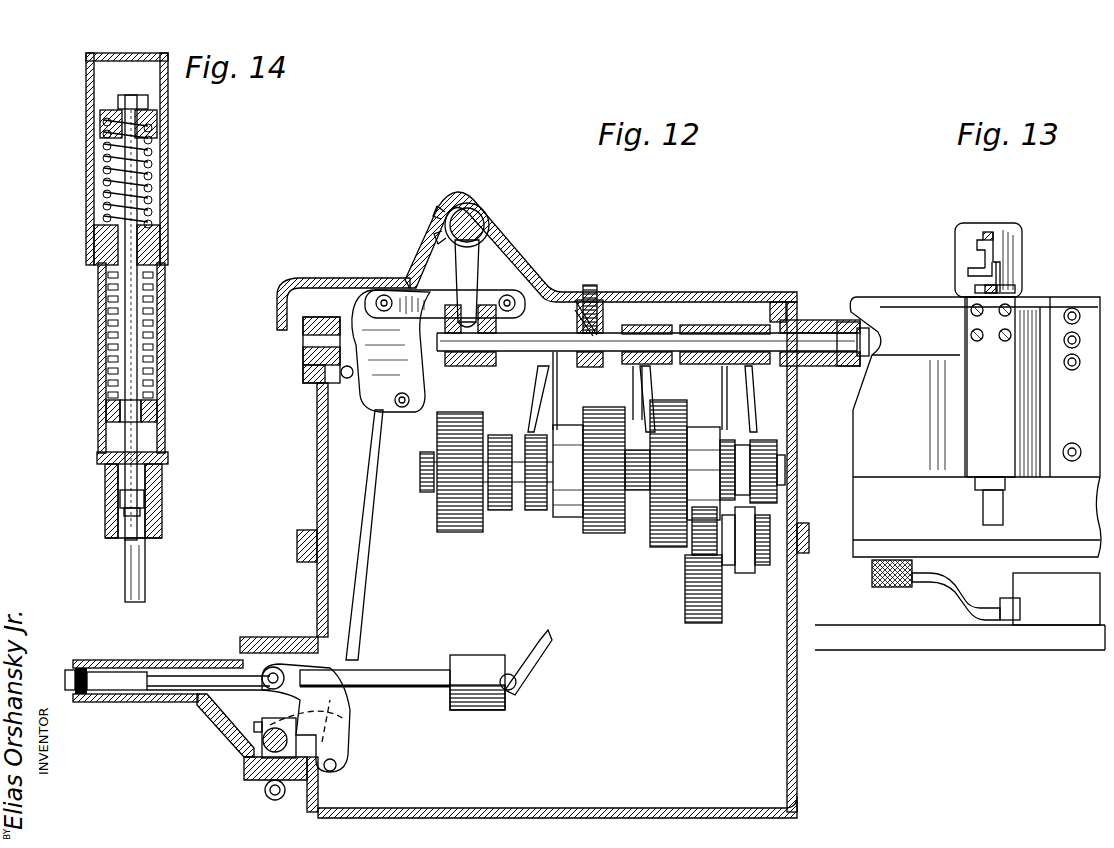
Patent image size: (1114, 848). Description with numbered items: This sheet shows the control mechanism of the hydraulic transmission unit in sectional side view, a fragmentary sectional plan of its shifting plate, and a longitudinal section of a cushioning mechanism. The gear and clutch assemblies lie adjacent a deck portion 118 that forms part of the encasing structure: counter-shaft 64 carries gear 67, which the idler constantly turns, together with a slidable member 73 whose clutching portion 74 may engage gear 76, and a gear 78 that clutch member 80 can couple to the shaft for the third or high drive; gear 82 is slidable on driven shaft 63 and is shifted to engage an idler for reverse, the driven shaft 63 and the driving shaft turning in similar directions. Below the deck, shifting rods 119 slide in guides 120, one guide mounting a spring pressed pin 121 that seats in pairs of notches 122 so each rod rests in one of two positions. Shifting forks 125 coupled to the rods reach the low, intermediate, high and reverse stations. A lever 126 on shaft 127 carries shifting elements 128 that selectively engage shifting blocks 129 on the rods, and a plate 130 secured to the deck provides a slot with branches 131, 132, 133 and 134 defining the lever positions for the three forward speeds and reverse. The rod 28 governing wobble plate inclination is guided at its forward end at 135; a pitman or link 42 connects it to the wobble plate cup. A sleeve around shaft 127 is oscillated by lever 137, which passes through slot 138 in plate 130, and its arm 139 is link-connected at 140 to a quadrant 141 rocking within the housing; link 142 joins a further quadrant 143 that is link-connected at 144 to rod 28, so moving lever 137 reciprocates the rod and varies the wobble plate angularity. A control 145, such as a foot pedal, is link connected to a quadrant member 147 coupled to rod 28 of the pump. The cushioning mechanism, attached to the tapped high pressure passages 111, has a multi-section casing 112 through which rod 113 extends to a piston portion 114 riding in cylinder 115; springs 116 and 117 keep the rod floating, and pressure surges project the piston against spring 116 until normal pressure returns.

In FIG. 12, the rod 28 is at (402, 658).
In FIG. 12, the pitman or link 42 is at (535, 662).
In FIG. 12, the driven shaft 63 is at (770, 535).
In FIG. 12, the counter-shaft 64 is at (432, 465).
In FIG. 12, the gear 67 is at (445, 533).
In FIG. 12, the clutch member 73 is at (500, 512).
In FIG. 12, the clutching portion 74 is at (522, 512).
In FIG. 12, the gear 76 is at (618, 533).
In FIG. 12, the gear 78 is at (665, 405).
In FIG. 12, the clutch member 80 is at (765, 440).
In FIG. 12, the gear 82 is at (700, 625).
In FIG. 14, the tap 111 is at (140, 562).
In FIG. 14, the multi-section casing 112 is at (166, 173).
In FIG. 14, the rod 113 is at (100, 336).
In FIG. 14, the piston portion 114 is at (125, 437).
In FIG. 14, the cylinder 115 is at (158, 500).
In FIG. 14, the spring 116 is at (150, 332).
In FIG. 14, the spring 117 is at (110, 195).
In FIG. 12, the deck portion 118 is at (672, 290).
In FIG. 13, the deck portion 118 is at (960, 473).
In FIG. 12, the shifting rod 119 is at (793, 340).
In FIG. 12, the guide 120 is at (685, 318).
In FIG. 12, the spring pressed pin 121 is at (600, 335).
In FIG. 12, the notches 122 is at (605, 335).
In FIG. 12, the shifting fork 125 is at (526, 380).
In FIG. 13, the lever 126 is at (987, 232).
In FIG. 12, the shaft 127 is at (480, 224).
In FIG. 12, the shifting element 128 is at (470, 272).
In FIG. 12, the shifting block 129 is at (436, 330).
In FIG. 13, the plate 130 is at (1012, 235).
In FIG. 13, the slot branch 131 is at (1000, 265).
In FIG. 13, the slot branch 132 is at (975, 252).
In FIG. 13, the slot branch 133 is at (1005, 232).
In FIG. 13, the slot branch 134 is at (966, 278).
In FIG. 12, the guide 135 is at (140, 635).
In FIG. 13, the lever 137 is at (975, 295).
In FIG. 13, the slot 138 is at (1012, 290).
In FIG. 12, the arm 139 is at (497, 278).
In FIG. 12, the link connection 140 is at (430, 290).
In FIG. 12, the quadrant 141 is at (370, 325).
In FIG. 12, the link 142 is at (362, 552).
In FIG. 12, the quadrant 143 is at (335, 717).
In FIG. 12, the link connection 144 is at (302, 638).
In FIG. 13, the control 145 is at (953, 605).
In FIG. 12, the quadrant member 147 is at (262, 792).